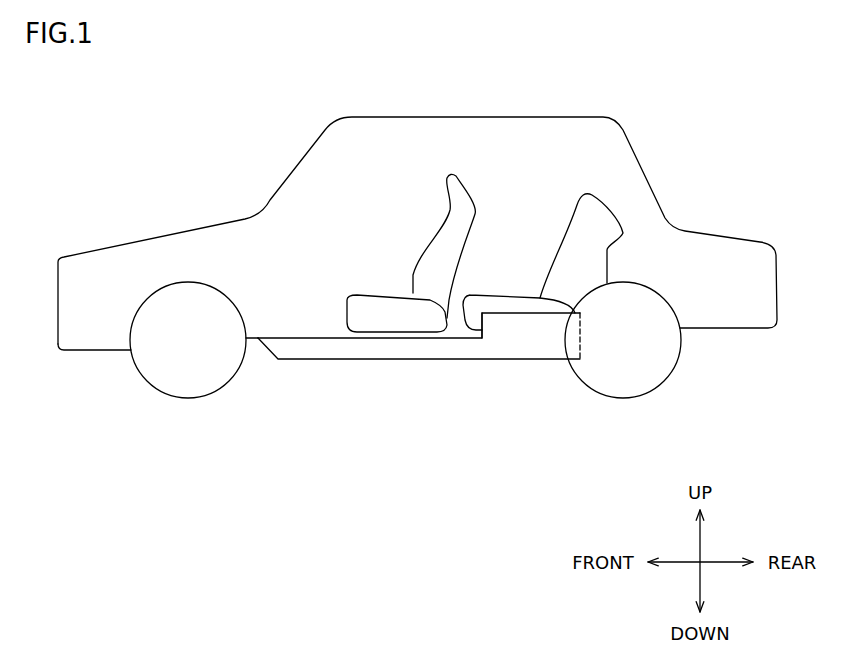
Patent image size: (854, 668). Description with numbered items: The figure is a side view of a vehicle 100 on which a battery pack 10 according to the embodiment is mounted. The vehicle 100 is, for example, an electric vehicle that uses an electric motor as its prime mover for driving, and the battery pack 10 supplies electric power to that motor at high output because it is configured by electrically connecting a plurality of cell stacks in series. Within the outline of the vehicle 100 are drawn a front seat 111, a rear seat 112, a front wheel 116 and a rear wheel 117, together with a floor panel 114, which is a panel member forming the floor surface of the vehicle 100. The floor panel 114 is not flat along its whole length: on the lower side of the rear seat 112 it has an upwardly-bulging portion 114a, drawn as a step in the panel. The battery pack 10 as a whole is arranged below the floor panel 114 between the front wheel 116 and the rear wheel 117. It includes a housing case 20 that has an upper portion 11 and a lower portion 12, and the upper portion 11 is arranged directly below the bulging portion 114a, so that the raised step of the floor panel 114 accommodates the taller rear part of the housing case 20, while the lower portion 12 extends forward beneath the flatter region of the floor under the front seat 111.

The vehicle 100 is at (684, 121).
The battery pack 10 is at (419, 260).
The upper portion 11 is at (530, 337).
The lower portion 12 is at (450, 359).
The housing case 20 is at (505, 362).
The front seat 111 is at (460, 173).
The rear seat 112 is at (590, 193).
The floor panel 114 is at (380, 340).
The bulging portion 114a is at (492, 318).
The front wheel 116 is at (188, 377).
The rear wheel 117 is at (622, 375).